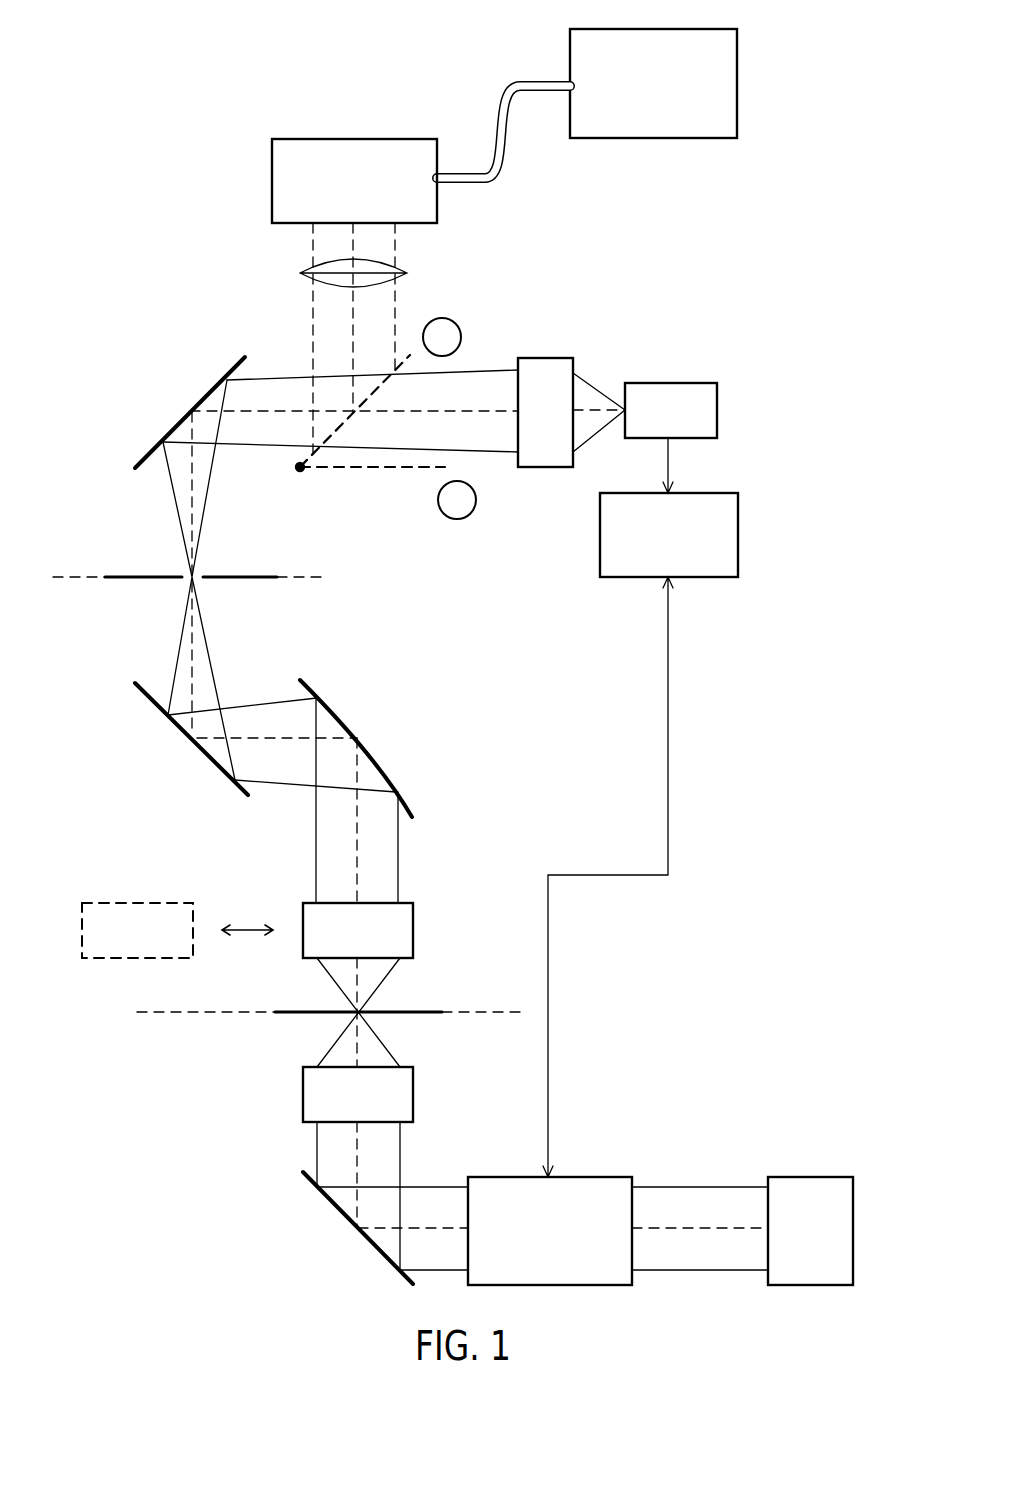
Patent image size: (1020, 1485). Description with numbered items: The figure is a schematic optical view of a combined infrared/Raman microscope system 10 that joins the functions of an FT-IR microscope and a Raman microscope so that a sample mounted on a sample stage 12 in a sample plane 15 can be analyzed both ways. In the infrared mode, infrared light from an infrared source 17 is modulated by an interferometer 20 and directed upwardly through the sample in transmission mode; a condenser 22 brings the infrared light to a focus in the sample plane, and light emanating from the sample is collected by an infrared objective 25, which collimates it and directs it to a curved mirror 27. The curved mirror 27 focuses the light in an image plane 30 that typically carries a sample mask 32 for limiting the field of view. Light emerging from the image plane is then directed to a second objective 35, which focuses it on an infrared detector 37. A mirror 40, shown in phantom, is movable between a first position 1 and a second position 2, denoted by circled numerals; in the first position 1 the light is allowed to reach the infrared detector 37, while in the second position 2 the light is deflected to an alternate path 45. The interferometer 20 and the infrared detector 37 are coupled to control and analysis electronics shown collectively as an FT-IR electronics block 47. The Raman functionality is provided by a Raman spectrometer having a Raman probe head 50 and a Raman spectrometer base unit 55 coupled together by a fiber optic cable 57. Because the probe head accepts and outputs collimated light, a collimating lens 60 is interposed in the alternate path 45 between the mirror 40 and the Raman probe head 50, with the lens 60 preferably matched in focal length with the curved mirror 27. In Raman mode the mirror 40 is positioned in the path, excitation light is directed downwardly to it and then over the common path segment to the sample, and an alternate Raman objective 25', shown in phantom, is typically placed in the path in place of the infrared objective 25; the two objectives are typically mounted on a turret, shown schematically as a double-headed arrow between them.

The first position of mirror 1 is at (457, 500).
The second position of mirror 2 is at (442, 337).
The combined infrared/Raman microscope system 10 is at (221, 1296).
The sample stage 12 is at (383, 1012).
The sample plane 15 is at (150, 1012).
The infrared source 17 is at (815, 1177).
The interferometer 20 is at (590, 1177).
The condenser 22 is at (413, 1095).
The infrared objective 25 is at (369, 918).
The alternate Raman objective 25' is at (177, 918).
The curved mirror 27 is at (337, 711).
The image plane 30 is at (300, 577).
The sample mask 32 is at (233, 577).
The second objective 35 is at (537, 358).
The infrared detector 37 is at (676, 383).
The mirror 40 is at (377, 470).
The alternate path 45 is at (353, 311).
The FT-IR electronics block 47 is at (700, 493).
The Raman probe head 50 is at (390, 139).
The Raman spectrometer base unit 55 is at (690, 29).
The fiber optic cable 57 is at (494, 82).
The collimating lens 60 is at (407, 273).